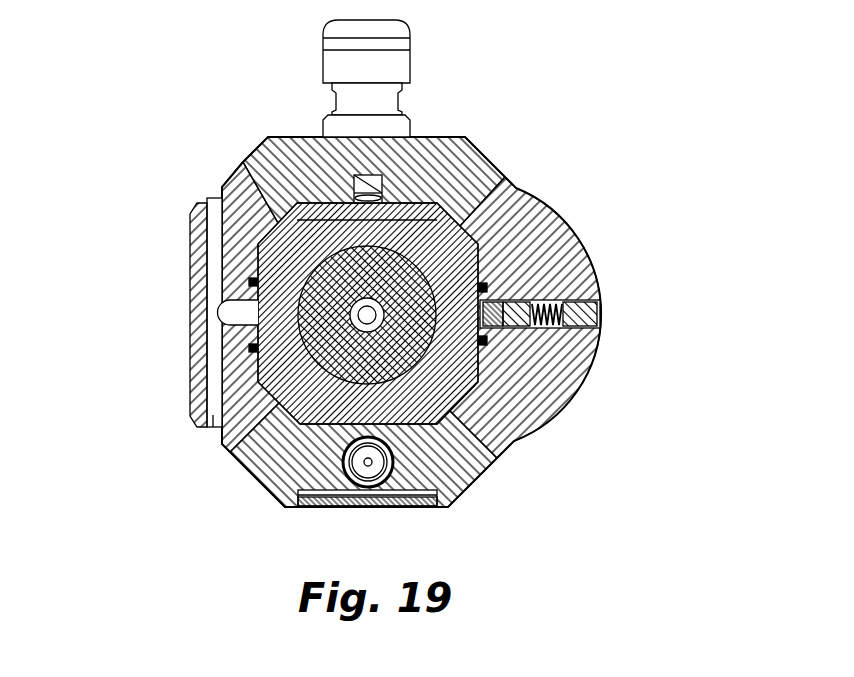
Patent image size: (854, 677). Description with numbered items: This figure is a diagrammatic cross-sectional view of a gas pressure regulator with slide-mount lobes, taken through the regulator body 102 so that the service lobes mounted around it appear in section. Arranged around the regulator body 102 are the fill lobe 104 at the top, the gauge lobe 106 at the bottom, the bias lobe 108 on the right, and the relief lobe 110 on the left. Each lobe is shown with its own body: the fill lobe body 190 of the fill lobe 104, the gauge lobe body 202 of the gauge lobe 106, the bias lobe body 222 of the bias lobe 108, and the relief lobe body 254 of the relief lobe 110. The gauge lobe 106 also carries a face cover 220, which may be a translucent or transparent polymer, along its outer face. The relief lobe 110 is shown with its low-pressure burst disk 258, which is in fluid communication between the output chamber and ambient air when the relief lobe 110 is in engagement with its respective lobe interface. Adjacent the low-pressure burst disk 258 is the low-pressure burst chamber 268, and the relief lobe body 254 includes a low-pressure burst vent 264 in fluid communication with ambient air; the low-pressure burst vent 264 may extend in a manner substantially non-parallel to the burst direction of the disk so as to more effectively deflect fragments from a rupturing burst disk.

The regulator body 102 is at (397, 220).
The fill lobe 104 is at (259, 110).
The gauge lobe 106 is at (257, 512).
The bias lobe 108 is at (590, 422).
The relief lobe 110 is at (157, 197).
The fill lobe body 190 is at (433, 148).
The gauge lobe body 202 is at (445, 468).
The face cover 220 is at (380, 500).
The bias lobe body 222 is at (573, 353).
The relief lobe body 254 is at (223, 182).
The low-pressure burst disk 258 is at (250, 283).
The low-pressure burst vent 264 is at (213, 427).
The low-pressure burst chamber 268 is at (233, 316).